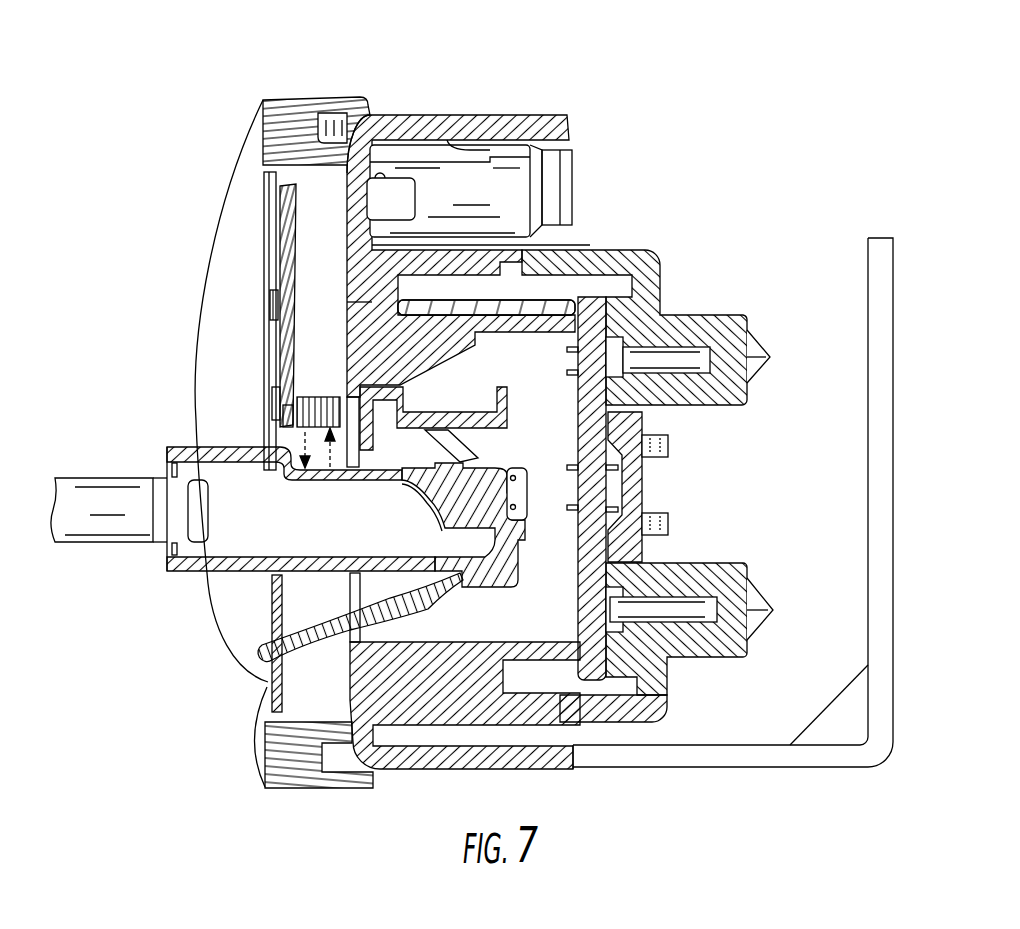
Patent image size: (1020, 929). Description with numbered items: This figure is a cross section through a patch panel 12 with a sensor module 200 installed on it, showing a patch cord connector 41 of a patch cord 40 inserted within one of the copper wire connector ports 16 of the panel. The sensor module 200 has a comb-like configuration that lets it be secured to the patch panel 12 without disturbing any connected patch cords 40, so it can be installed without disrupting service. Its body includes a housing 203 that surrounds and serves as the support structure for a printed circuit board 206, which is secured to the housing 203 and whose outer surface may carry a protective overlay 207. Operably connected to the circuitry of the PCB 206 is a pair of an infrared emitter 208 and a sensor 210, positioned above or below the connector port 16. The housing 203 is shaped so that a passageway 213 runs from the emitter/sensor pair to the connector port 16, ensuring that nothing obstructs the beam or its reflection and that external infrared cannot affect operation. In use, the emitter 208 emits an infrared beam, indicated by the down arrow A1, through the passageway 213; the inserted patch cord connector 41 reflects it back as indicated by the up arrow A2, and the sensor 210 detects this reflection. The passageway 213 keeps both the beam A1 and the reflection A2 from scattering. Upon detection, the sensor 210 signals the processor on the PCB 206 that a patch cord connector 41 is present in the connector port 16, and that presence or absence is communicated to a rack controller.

The patch panel 12 is at (466, 114).
The connector port 16 is at (270, 575).
The patch cord 40 is at (110, 478).
The patch cord connector 41 is at (227, 574).
The sensor module 200 is at (258, 248).
The housing 203 is at (318, 397).
The printed circuit board 206 is at (290, 210).
The overlay 207 is at (285, 265).
The IR emitter 208 is at (290, 412).
The sensor 210 is at (194, 381).
The passageway 213 is at (352, 464).
The down arrow (IR beam) A1 is at (307, 443).
The up arrow (reflection) A2 is at (330, 455).